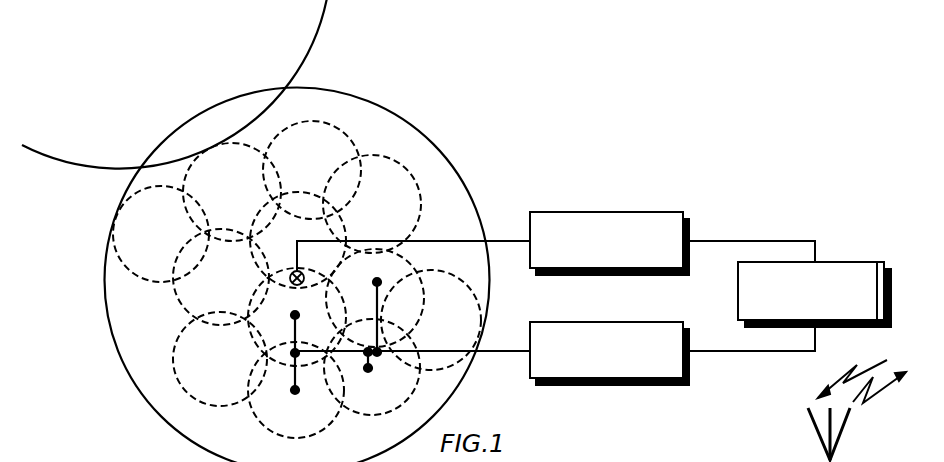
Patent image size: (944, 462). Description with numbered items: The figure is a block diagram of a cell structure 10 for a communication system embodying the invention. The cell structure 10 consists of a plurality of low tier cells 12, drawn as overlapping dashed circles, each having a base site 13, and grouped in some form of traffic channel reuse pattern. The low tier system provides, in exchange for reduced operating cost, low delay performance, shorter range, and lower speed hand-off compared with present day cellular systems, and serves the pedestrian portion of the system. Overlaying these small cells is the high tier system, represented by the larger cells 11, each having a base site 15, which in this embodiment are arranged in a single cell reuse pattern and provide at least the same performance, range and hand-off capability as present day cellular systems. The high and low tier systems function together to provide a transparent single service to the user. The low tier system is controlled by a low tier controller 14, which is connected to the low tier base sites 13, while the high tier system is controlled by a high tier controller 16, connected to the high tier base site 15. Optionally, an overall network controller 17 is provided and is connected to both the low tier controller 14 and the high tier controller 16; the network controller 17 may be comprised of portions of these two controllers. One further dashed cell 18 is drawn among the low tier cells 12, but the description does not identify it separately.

The cell structure 10 is at (665, 129).
The high tier cells 11 is at (312, 50).
The low tier cells 12 is at (385, 157).
The base site 13 is at (378, 281).
The low tier controller 14 is at (663, 318).
The base site 15 is at (300, 268).
The high tier controller 16 is at (650, 208).
The network controller 17 is at (863, 260).
The microcell 18 is at (457, 273).